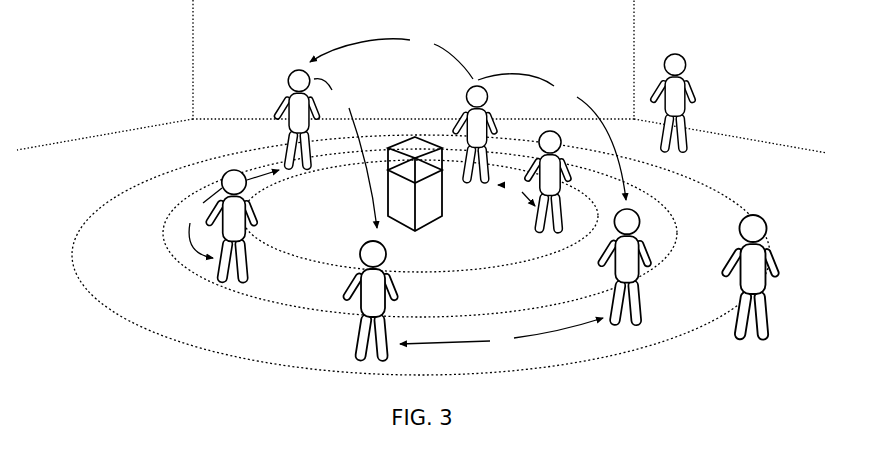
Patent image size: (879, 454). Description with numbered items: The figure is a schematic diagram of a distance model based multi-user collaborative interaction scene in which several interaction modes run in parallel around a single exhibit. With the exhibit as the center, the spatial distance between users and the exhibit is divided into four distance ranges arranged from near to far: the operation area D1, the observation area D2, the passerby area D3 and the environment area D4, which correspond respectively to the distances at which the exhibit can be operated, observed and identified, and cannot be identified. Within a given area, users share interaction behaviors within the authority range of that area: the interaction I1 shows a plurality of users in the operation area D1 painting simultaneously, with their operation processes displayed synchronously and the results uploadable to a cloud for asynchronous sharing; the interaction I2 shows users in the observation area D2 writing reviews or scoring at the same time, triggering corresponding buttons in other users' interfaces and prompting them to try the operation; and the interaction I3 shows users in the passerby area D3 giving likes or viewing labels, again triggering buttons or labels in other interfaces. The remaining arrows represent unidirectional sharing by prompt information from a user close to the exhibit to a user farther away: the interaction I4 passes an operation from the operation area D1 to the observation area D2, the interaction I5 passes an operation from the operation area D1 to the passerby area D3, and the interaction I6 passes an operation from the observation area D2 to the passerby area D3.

The operation area D1 is at (420, 216).
The observation area D2 is at (420, 233).
The passerby area D3 is at (421, 255).
The environment area D4 is at (80, 339).
The interaction behavior shared among users in the operation area I1 is at (516, 188).
The interaction behavior shared among users in the observation area I2 is at (230, 214).
The interaction behavior shared among users in the passerby area I3 is at (501, 335).
The unidirectional sharing from operation area to observation area I4 is at (391, 55).
The unidirectional sharing from operation area to passerby area I5 is at (552, 137).
The unidirectional sharing from observation area to passerby area I6 is at (345, 153).